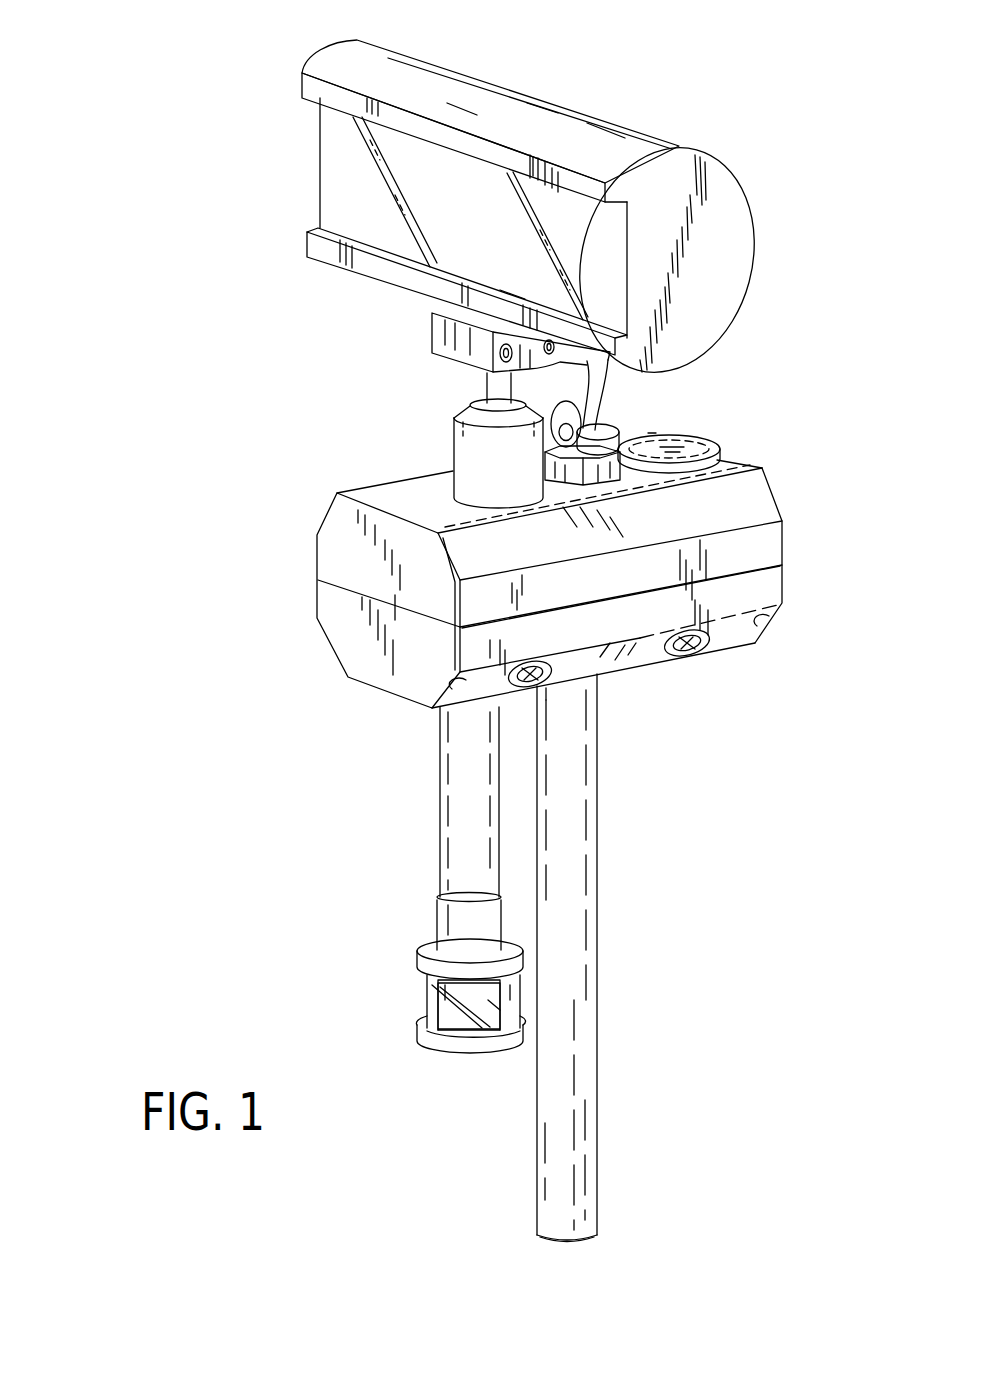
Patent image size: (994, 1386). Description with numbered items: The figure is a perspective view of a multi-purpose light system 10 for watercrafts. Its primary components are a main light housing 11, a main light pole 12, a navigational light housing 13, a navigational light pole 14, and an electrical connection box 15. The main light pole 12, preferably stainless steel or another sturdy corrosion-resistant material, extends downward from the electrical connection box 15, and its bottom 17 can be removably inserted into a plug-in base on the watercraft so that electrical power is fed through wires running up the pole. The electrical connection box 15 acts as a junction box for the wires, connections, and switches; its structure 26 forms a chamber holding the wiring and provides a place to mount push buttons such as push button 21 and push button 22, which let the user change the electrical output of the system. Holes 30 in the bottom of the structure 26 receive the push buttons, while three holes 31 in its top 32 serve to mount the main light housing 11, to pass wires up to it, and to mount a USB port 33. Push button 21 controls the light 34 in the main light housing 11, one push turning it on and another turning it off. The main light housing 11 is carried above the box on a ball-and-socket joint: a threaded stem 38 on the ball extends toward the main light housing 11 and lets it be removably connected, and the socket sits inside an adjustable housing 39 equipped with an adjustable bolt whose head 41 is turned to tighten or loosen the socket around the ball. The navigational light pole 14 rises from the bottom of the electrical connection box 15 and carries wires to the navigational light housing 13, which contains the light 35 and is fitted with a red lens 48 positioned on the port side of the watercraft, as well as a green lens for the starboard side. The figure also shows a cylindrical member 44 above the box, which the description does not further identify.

The multi-purpose light system 10 is at (176, 65).
The main light housing 11 is at (733, 290).
The main light pole 12 is at (597, 977).
The navigational light housing 13 is at (445, 1042).
The navigational light pole 14 is at (437, 770).
The electrical connection box 15 is at (780, 503).
The bottom of the main light pole 17 is at (578, 1240).
The push button 21 is at (553, 690).
The push button 22 is at (688, 650).
The structure 26 is at (690, 544).
The holes 30 is at (548, 675).
The holes 31 is at (730, 467).
The top of the structure 32 is at (383, 491).
The USB port 33 is at (678, 443).
The light 34 is at (332, 163).
The light 35 is at (427, 1002).
The threaded stem 38 is at (485, 388).
The adjustable housing 39 is at (453, 433).
The head 41 is at (604, 393).
The pivot cylinder 44 is at (513, 479).
The red lens 48 is at (490, 1022).